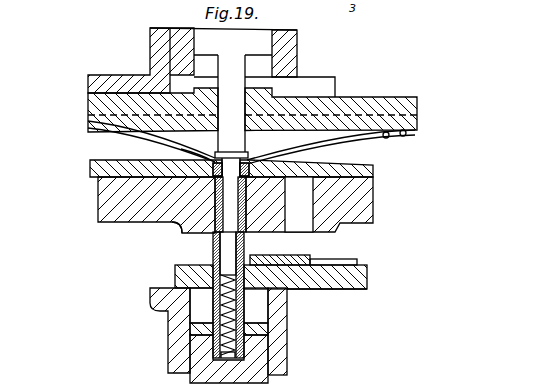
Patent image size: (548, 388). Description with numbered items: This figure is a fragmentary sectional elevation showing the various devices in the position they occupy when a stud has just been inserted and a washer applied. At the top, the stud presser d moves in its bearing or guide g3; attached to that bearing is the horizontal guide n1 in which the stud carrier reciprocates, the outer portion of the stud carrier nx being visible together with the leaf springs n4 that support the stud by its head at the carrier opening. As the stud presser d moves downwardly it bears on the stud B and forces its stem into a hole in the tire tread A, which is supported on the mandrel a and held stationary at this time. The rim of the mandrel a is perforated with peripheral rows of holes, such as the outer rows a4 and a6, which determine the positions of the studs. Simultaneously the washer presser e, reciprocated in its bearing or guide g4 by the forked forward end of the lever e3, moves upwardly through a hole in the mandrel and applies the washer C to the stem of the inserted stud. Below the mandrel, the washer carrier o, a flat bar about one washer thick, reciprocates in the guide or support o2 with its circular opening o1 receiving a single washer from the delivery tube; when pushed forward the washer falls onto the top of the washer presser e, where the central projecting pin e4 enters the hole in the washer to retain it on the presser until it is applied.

The horizontal guide n1 is at (360, 88).
The outer portion of the stud carrier nx is at (188, 117).
The bearing or guide g3 is at (292, 56).
The stud presser d is at (231, 116).
The stud B is at (241, 153).
The leaf springs n4 is at (313, 142).
The washer C is at (181, 149).
The tire tread A is at (357, 166).
The mandrel a is at (373, 193).
The peripheral row of perforations a6 is at (299, 204).
The peripheral row of perforations a4 is at (181, 233).
The guide or support o2 is at (347, 289).
The washer carrier o is at (354, 264).
The circular opening o1 is at (298, 258).
The bearing or guide g4 is at (176, 328).
The washer presser e is at (214, 244).
The central projecting pin e4 is at (240, 256).
The lever e3 is at (241, 318).